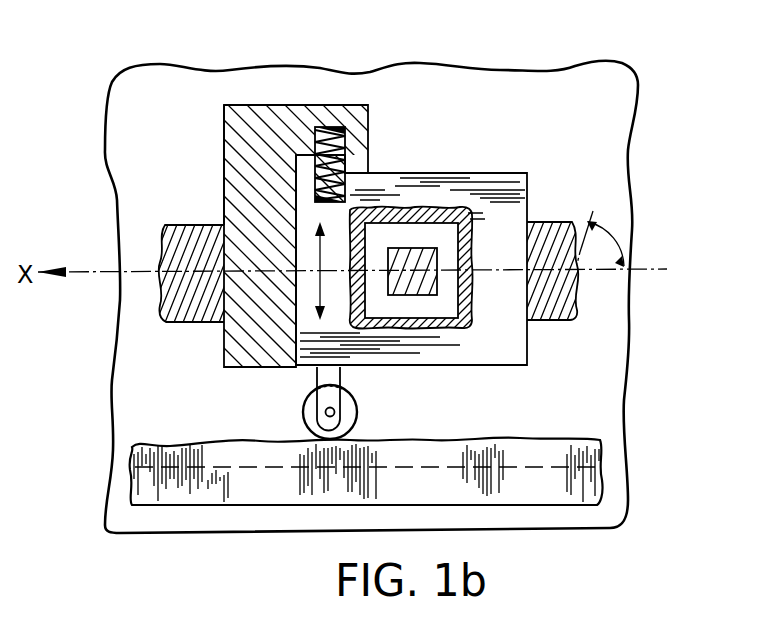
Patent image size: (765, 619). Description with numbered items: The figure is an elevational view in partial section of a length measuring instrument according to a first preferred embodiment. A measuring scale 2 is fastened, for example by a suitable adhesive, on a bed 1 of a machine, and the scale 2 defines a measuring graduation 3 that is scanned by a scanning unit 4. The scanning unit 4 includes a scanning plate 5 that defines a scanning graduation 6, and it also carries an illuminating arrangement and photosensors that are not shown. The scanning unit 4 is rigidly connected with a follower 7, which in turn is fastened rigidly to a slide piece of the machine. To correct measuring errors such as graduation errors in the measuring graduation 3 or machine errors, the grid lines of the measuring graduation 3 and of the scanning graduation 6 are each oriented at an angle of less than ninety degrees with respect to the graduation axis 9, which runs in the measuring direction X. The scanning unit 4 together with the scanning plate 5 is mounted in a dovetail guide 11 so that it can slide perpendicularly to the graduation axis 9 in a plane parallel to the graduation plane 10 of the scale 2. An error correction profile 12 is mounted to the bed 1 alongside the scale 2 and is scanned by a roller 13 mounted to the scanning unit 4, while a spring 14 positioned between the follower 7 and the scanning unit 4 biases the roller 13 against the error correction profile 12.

The bed 1 is at (600, 397).
The measuring scale 2 is at (665, 331).
The measuring graduation 3 is at (665, 296).
The scanning unit 4 is at (513, 185).
The scanning plate 5 is at (452, 217).
The scanning graduation 6 is at (410, 287).
The follower 7 is at (223, 340).
The graduation axis 9 is at (645, 267).
The graduation plane 10 is at (657, 155).
The dovetail guide 11 is at (223, 200).
The error correction profile 12 is at (587, 435).
The roller 13 is at (307, 403).
The spring 14 is at (368, 160).